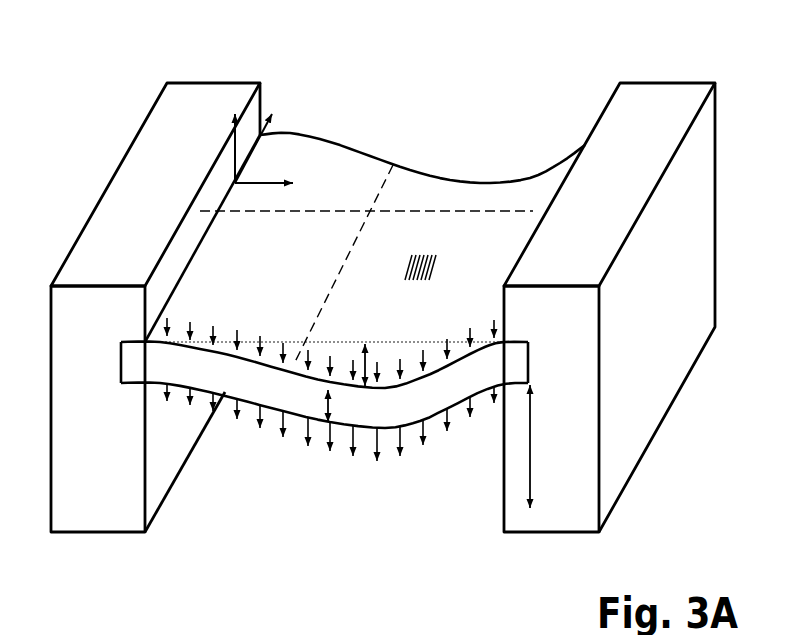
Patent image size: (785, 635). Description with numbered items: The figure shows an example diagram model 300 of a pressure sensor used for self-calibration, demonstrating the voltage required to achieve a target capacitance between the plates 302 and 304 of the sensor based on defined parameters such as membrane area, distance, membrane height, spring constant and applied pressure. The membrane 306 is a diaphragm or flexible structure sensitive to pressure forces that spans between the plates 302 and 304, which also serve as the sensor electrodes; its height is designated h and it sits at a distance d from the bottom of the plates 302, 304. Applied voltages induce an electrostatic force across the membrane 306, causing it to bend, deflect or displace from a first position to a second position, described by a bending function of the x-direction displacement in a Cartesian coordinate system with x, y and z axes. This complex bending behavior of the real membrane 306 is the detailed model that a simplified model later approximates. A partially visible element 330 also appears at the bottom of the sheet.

The diagram model 300 is at (325, 46).
The plate 302 is at (88, 233).
The plate 304 is at (612, 250).
The membrane 306 is at (358, 150).
The element 330 is at (305, 634).